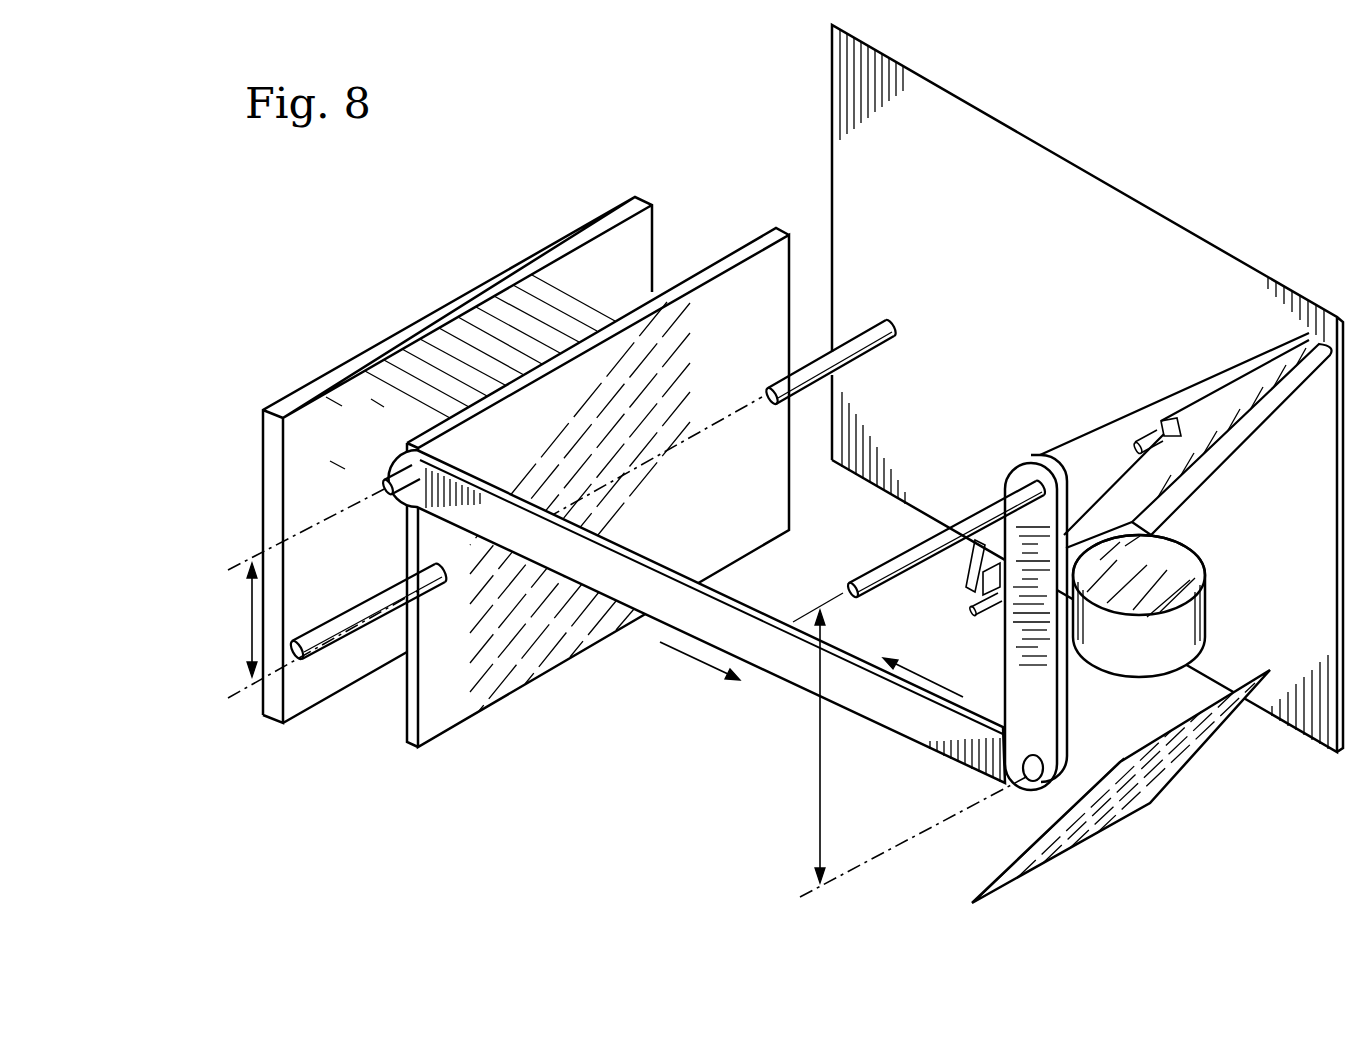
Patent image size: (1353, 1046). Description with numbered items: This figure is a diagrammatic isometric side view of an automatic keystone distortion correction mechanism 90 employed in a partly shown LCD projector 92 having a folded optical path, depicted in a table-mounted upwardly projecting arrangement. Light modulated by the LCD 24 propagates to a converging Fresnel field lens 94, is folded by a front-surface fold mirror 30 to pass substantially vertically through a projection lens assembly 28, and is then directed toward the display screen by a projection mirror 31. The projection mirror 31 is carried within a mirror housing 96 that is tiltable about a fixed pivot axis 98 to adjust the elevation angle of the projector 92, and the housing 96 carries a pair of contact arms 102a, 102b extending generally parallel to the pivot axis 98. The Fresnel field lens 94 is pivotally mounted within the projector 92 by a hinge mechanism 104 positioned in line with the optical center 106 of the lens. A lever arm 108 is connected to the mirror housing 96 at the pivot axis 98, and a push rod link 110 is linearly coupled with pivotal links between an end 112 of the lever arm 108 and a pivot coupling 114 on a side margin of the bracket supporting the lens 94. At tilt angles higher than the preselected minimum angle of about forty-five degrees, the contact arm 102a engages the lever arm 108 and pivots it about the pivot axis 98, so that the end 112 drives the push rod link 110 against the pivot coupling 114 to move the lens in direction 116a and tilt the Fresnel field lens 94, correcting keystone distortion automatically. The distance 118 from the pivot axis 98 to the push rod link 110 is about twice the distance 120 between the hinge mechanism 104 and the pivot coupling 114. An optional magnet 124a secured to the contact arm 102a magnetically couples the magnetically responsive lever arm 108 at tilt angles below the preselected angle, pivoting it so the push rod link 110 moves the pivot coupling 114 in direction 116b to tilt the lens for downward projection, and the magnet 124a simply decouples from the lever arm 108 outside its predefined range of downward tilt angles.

The LCD 24 is at (557, 334).
The projection lens assembly 28 is at (1187, 545).
The front-surface fold mirror 30 is at (1057, 857).
The projection mirror 31 is at (1222, 433).
The automatic keystone distortion correction mechanism 90 is at (648, 760).
The LCD projector 92 is at (1132, 148).
The converging Fresnel field lens 94 is at (779, 507).
The mirror housing 96 is at (1151, 421).
The pivot axis 98 is at (990, 510).
The contact arm 102a is at (972, 613).
The contact arm 102b is at (1140, 432).
The hinge mechanism 104 is at (330, 637).
The optical center 106 is at (717, 420).
The lever arm 108 is at (1043, 690).
The push rod link 110 is at (897, 697).
The end 112 is at (1012, 786).
The pivot coupling 114 is at (389, 478).
The direction 116a is at (690, 660).
The direction 116b is at (927, 680).
The distance 118 is at (818, 805).
The distance 120 is at (250, 605).
The magnet 124a is at (980, 583).